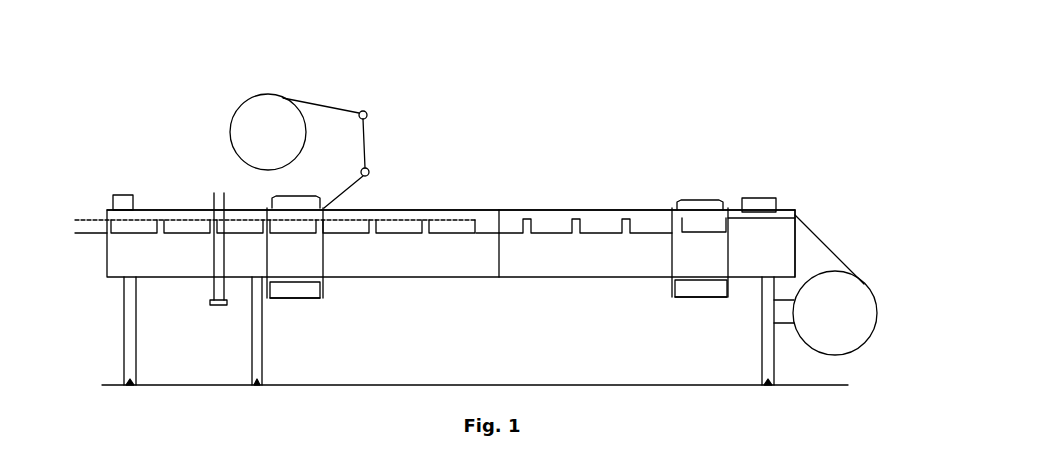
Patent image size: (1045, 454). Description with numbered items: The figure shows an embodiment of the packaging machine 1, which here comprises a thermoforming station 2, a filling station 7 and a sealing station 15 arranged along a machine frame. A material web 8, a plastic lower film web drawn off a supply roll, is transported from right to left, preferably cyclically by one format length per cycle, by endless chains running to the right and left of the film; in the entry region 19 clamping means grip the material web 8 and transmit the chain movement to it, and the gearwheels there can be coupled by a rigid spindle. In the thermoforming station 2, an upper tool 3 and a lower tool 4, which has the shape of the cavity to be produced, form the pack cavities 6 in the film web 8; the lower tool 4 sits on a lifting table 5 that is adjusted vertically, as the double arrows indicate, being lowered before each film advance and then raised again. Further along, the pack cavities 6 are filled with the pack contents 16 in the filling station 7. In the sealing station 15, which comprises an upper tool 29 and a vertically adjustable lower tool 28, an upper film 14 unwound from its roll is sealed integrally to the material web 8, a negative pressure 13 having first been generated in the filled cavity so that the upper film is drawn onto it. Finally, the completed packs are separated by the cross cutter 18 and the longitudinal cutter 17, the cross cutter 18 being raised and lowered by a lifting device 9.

The packaging machine 1 is at (633, 108).
The thermoforming station 2 is at (717, 187).
The upper tool of the thermoforming station 3 is at (688, 205).
The lower tool of the thermoforming station 4 is at (675, 280).
The lifting table 5 is at (212, 303).
The pack cavity 6 is at (598, 228).
The filling station 7 is at (473, 163).
The film web 8 is at (825, 248).
The lifting device 9 is at (217, 316).
The negative pressure 13 is at (763, 208).
The upper film web 14 is at (247, 122).
The sealing station 15 is at (300, 186).
The pack contents 16 is at (453, 222).
The longitudinal cutter 17 is at (125, 190).
The cross cutter 18 is at (210, 185).
The entry region 19 is at (796, 170).
The lower tool of the sealing station 28 is at (318, 283).
The upper tool of the sealing station 29 is at (308, 197).